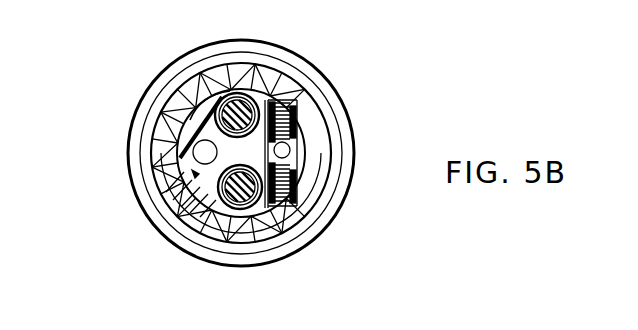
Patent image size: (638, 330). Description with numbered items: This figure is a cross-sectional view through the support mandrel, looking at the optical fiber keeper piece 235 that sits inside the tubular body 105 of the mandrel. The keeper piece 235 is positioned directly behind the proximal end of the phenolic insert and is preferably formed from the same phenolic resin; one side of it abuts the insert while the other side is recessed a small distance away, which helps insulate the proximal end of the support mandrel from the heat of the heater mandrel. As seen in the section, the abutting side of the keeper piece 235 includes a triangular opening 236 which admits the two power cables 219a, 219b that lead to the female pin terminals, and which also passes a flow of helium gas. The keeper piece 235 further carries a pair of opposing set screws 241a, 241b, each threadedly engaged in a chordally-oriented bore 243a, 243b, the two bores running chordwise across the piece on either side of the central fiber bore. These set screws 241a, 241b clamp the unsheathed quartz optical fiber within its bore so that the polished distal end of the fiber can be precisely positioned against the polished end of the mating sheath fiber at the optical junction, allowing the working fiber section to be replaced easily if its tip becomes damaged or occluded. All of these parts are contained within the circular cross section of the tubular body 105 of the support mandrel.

The tubular body 105 is at (176, 102).
The power cable 219a is at (283, 68).
The power cable 219b is at (318, 240).
The optical fiber keeper piece 235 is at (160, 214).
The triangular opening 236 is at (192, 173).
The set screw 241a is at (300, 117).
The set screw 241b is at (292, 172).
The chordally-oriented bore 243a is at (290, 101).
The chordally-oriented bore 243b is at (322, 218).